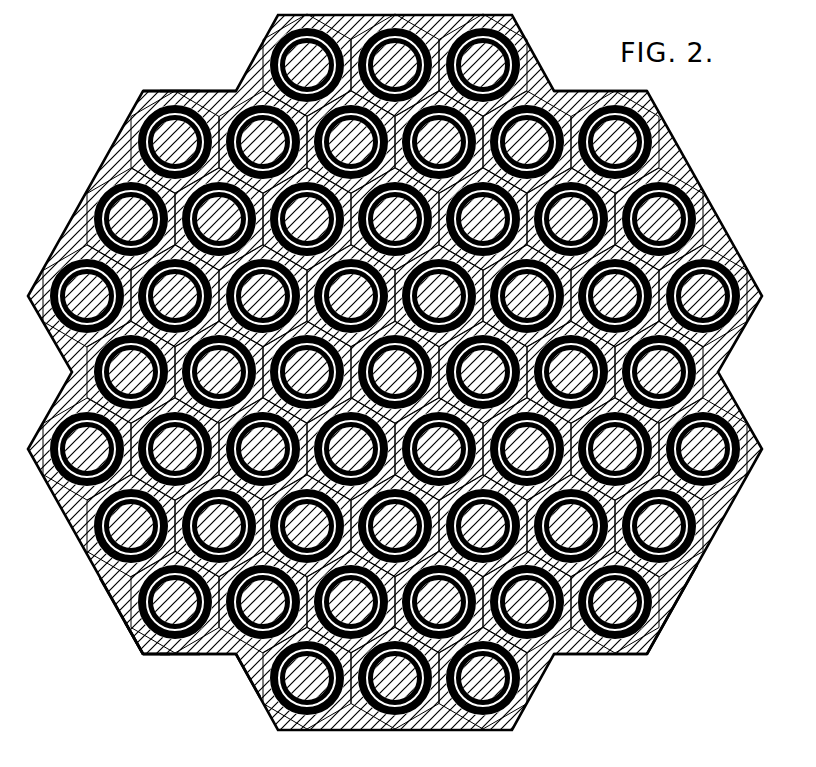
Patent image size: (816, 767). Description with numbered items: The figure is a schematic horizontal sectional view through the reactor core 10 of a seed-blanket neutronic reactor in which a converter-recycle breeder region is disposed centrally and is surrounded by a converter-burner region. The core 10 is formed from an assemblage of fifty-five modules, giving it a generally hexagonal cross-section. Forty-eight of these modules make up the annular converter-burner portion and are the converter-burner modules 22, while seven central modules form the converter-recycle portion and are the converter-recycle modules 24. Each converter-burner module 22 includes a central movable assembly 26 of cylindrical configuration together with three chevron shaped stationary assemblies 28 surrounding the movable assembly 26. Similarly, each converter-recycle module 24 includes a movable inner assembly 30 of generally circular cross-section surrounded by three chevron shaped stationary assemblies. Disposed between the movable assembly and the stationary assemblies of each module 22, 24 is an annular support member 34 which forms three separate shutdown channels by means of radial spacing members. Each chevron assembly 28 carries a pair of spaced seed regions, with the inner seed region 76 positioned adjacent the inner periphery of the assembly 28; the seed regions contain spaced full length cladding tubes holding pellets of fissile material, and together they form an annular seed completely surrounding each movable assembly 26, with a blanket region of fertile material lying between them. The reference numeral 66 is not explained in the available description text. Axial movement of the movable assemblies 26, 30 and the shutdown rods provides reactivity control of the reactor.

The reactor core 10 is at (96, 185).
The converter-burner module 22 is at (140, 124).
The converter-recycle module 24 is at (451, 305).
The central movable assembly 26 is at (148, 112).
The chevron shaped stationary assembly 28 is at (151, 97).
The movable inner assembly 30 is at (122, 609).
The annular support member 34 is at (181, 98).
The corner 66 is at (138, 638).
The seed region 76 is at (152, 654).